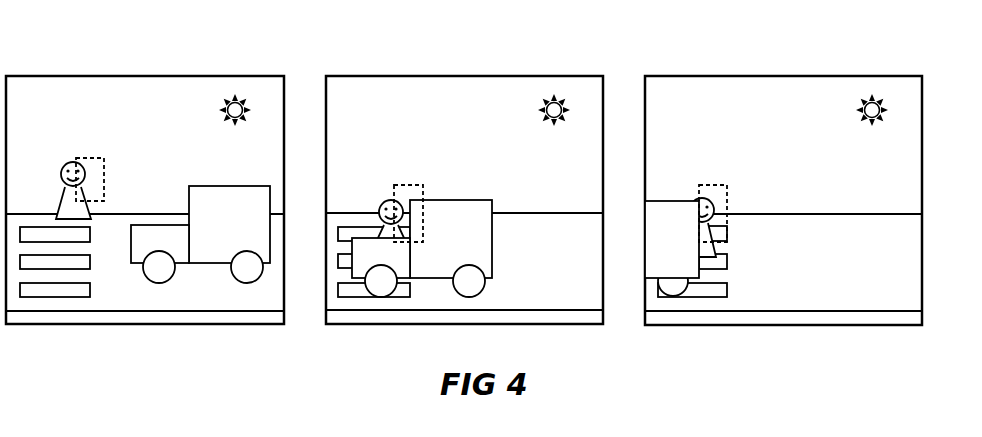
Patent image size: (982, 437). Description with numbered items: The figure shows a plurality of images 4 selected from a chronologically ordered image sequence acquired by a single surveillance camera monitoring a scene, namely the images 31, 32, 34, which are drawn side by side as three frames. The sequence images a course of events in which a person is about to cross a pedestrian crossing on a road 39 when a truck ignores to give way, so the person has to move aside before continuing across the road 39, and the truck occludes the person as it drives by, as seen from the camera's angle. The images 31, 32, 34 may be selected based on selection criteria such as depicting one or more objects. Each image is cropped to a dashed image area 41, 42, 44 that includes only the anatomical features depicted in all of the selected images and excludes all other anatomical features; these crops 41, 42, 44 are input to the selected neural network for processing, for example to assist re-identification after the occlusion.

The plurality of images 4 is at (127, 61).
The digital image 31 is at (160, 76).
The digital image 32 is at (443, 75).
The digital image 34 is at (747, 75).
The road 39 is at (216, 299).
The image area 41 is at (97, 168).
The image area 42 is at (410, 193).
The image area 44 is at (720, 193).